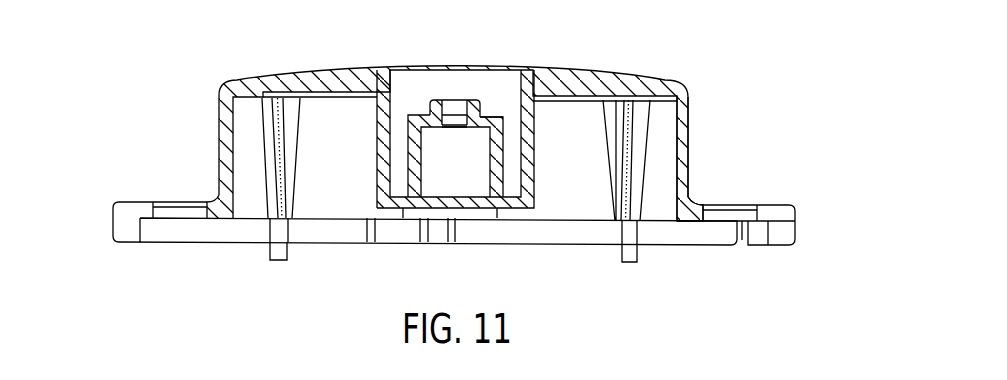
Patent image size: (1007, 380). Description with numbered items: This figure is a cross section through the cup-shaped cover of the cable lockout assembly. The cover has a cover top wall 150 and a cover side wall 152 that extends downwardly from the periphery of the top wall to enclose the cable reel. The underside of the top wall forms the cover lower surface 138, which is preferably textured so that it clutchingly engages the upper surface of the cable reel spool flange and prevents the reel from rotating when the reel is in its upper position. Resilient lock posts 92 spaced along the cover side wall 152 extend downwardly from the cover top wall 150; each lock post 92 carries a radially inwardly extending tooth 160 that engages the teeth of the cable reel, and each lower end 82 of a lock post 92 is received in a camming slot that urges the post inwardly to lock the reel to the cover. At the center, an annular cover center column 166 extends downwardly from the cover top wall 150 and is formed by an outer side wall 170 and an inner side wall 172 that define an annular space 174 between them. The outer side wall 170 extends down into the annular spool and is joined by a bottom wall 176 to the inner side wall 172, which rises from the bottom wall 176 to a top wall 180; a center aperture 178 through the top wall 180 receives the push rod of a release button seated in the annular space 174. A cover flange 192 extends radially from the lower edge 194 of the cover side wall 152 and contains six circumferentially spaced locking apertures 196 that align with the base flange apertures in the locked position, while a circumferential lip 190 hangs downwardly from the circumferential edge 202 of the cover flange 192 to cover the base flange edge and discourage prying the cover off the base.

The lower end 82 is at (273, 262).
The lock post 92 is at (275, 120).
The cover lower surface 138 is at (352, 100).
The cover top wall 150 is at (573, 80).
The cover side wall 152 is at (688, 152).
The tooth 160 is at (290, 191).
The annular cover center column 166 is at (408, 100).
The outer side wall 170 is at (522, 152).
The inner side wall 172 is at (497, 135).
The annular space 174 is at (512, 182).
The bottom wall 176 is at (506, 217).
The center aperture 178 is at (447, 108).
The top wall 180 is at (497, 113).
The circumferential lip 190 is at (113, 231).
The cover flange 192 is at (783, 207).
The lower edge 194 is at (688, 204).
The locking aperture 196 is at (168, 209).
The circumferential edge 202 is at (123, 203).